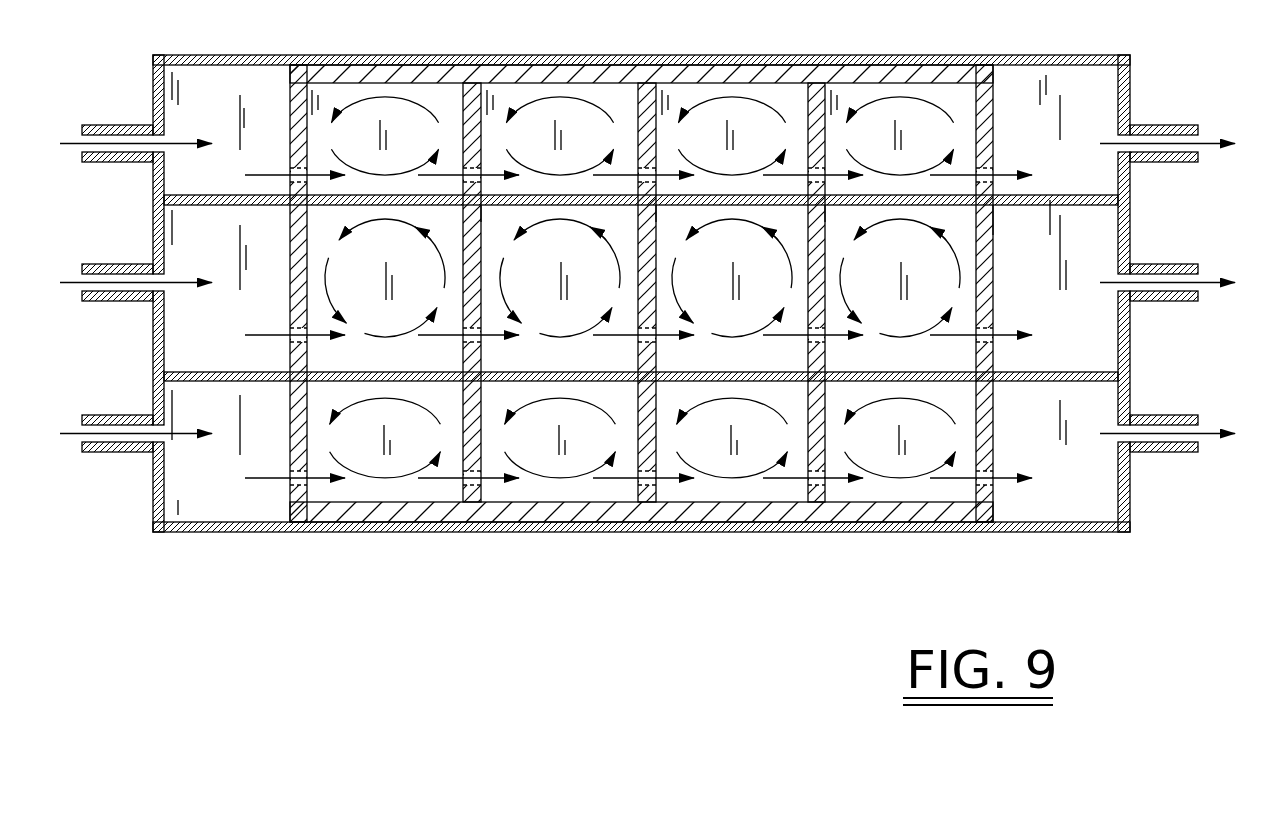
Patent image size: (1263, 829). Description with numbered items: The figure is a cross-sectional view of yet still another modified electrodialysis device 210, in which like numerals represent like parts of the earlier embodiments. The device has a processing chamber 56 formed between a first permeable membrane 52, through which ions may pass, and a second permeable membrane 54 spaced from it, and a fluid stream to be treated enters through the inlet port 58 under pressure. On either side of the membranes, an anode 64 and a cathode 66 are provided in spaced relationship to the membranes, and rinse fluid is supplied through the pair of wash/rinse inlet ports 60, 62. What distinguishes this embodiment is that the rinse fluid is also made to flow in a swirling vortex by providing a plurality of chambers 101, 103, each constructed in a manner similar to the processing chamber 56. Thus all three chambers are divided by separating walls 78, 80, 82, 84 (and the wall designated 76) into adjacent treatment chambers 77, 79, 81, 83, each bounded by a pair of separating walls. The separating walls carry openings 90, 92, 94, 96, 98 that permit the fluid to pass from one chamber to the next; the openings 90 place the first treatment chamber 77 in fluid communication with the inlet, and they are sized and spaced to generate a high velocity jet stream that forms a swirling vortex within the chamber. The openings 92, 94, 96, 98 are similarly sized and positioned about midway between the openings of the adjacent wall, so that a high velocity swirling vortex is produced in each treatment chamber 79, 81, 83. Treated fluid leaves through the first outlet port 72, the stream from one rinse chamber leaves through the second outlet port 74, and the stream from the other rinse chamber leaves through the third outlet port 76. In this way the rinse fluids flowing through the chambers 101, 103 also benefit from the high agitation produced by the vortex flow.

The modified device 210 is at (228, 548).
The wash/rinse inlet port 60 is at (97, 125).
The inlet port 58 is at (98, 264).
The wash/rinse inlet port 62 is at (98, 415).
The second outlet port 74 is at (1172, 125).
The first outlet port 72 is at (1172, 264).
The third outlet port 76 is at (1178, 415).
The chamber 101 is at (226, 181).
The processing chamber 56 is at (212, 326).
The chamber 103 is at (226, 496).
The first permeable membrane 52 is at (596, 205).
The second permeable membrane 54 is at (583, 349).
The anode 64 is at (575, 78).
The cathode 66 is at (433, 508).
The openings 90 is at (290, 175).
The openings 92 is at (466, 150).
The openings 94 is at (646, 112).
The openings 96 is at (812, 160).
The openings 98 is at (993, 175).
The separating wall 78 is at (494, 214).
The separating wall 80 is at (668, 214).
The separating wall 82 is at (838, 214).
The separating wall 84 is at (993, 236).
The first treatment chamber 77 is at (370, 151).
The treatment chamber 79 is at (545, 151).
The treatment chamber 81 is at (717, 151).
The treatment chamber 83 is at (885, 151).